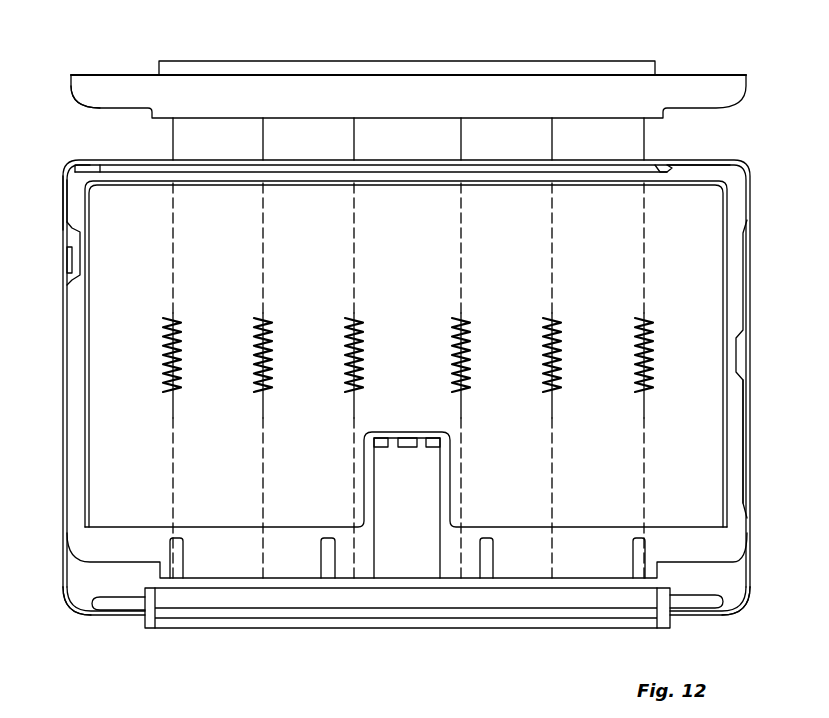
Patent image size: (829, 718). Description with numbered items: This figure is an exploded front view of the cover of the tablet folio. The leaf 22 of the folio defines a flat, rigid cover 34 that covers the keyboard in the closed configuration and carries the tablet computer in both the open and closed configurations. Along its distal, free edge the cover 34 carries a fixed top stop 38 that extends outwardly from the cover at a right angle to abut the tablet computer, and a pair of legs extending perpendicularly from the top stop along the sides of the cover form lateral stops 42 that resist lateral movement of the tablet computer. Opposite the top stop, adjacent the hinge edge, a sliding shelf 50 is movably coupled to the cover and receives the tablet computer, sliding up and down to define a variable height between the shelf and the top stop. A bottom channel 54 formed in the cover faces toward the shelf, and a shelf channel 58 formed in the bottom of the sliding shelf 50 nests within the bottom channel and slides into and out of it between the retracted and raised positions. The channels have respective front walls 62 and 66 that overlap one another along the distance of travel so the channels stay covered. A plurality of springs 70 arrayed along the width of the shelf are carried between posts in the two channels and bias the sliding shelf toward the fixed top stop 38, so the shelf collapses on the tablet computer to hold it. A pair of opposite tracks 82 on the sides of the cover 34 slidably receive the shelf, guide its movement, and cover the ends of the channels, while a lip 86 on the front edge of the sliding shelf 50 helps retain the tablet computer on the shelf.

The leaf 22 is at (748, 276).
The cover 34 is at (746, 403).
The fixed top stop 38 is at (697, 163).
The lateral stops 42 is at (67, 202).
The sliding shelf 50 is at (292, 72).
The bottom channel 54 is at (292, 580).
The shelf channel 58 is at (120, 96).
The front wall 62 is at (208, 582).
The front wall 66 is at (403, 97).
The springs 70 is at (557, 348).
The tracks 82 is at (67, 562).
The lip 86 is at (503, 61).